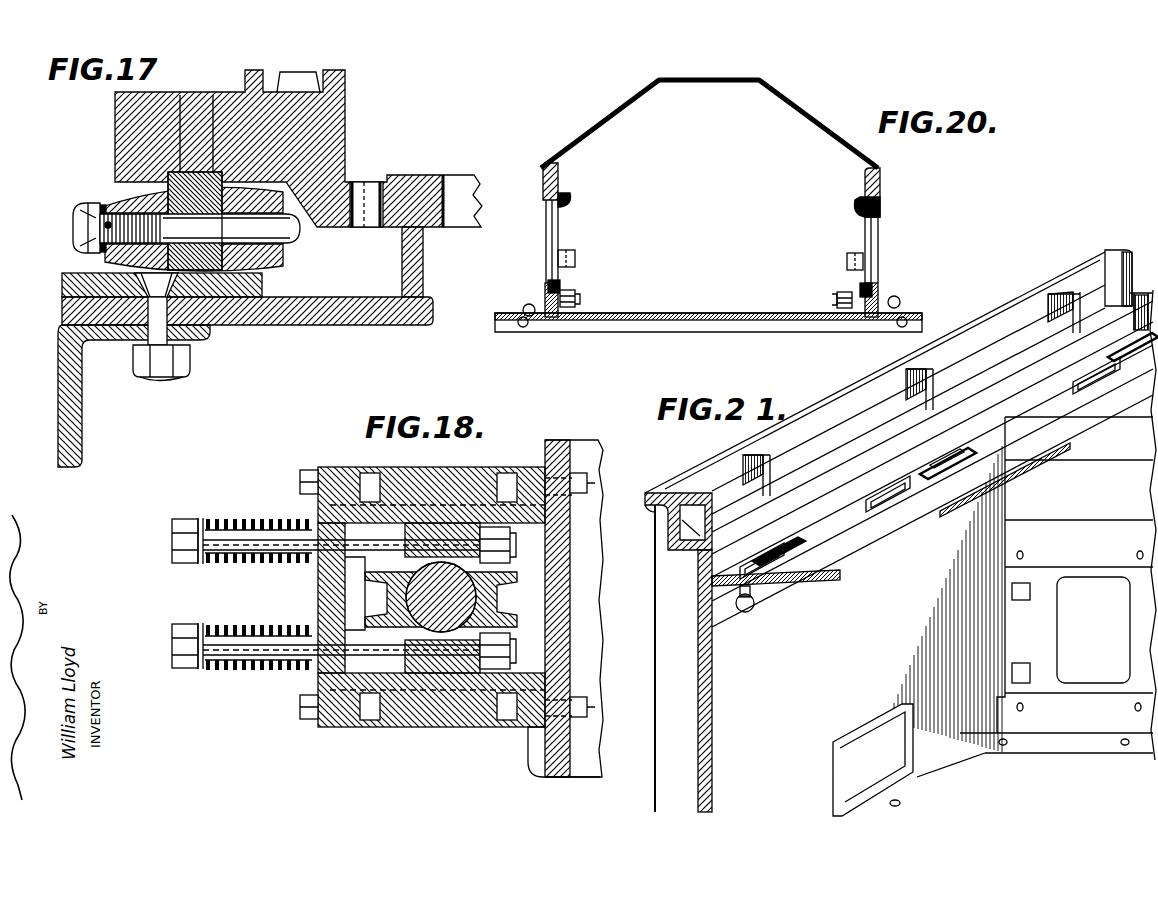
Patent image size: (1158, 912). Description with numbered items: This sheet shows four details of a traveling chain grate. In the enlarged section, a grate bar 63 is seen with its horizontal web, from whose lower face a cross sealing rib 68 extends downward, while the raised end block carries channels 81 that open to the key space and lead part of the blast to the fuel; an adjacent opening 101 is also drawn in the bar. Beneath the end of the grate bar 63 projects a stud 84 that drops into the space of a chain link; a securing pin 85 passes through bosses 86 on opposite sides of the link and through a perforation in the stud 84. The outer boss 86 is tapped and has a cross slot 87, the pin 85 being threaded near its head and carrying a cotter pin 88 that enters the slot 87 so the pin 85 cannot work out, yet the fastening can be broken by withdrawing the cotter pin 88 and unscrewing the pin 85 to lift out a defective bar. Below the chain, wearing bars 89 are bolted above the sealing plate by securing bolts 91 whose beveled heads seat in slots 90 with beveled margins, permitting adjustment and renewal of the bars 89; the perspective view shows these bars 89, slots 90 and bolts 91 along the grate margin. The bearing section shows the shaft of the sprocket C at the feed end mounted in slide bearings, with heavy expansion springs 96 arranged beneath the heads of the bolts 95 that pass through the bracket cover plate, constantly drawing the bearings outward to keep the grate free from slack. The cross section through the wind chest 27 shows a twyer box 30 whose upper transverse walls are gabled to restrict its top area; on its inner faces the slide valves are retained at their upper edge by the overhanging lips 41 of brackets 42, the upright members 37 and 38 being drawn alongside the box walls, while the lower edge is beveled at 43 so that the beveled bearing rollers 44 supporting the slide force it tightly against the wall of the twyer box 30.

In FIG. 17, the grate bar 63 is at (338, 118).
In FIG. 17, the cross sealing rib 68 is at (423, 275).
In FIG. 17, the channels 81 is at (266, 74).
In FIG. 17, the stud 84 is at (170, 178).
In FIG. 17, the securing pin 85 is at (295, 228).
In FIG. 17, the bosses 86 is at (126, 196).
In FIG. 17, the cross slot 87 is at (101, 205).
In FIG. 17, the cotter pin 88 is at (76, 234).
In FIG. 17, the wearing bars 89 is at (262, 288).
In FIG. 21, the wearing bars 89 is at (899, 438).
In FIG. 17, the securing bolts 91 is at (157, 378).
In FIG. 21, the securing bolts 91 is at (950, 447).
In FIG. 17, the bolt hole 101 is at (364, 224).
In FIG. 18, the bolts 95 is at (180, 622).
In FIG. 18, the expansion springs 96 is at (258, 623).
In FIG. 18, the sprocket C is at (497, 590).
In FIG. 20, the twyer box 30 is at (811, 118).
In FIG. 20, the brackets 42 is at (865, 177).
In FIG. 20, the overhanging lips 41 is at (862, 205).
In FIG. 20, the rod 37 is at (557, 240).
In FIG. 20, the sleeve 38 is at (545, 252).
In FIG. 20, the beveled lower edge 43 is at (858, 285).
In FIG. 20, the beveled bearing rollers 44 is at (566, 291).
In FIG. 20, the wind chest 27 is at (724, 318).
In FIG. 21, the slots 90 is at (928, 462).